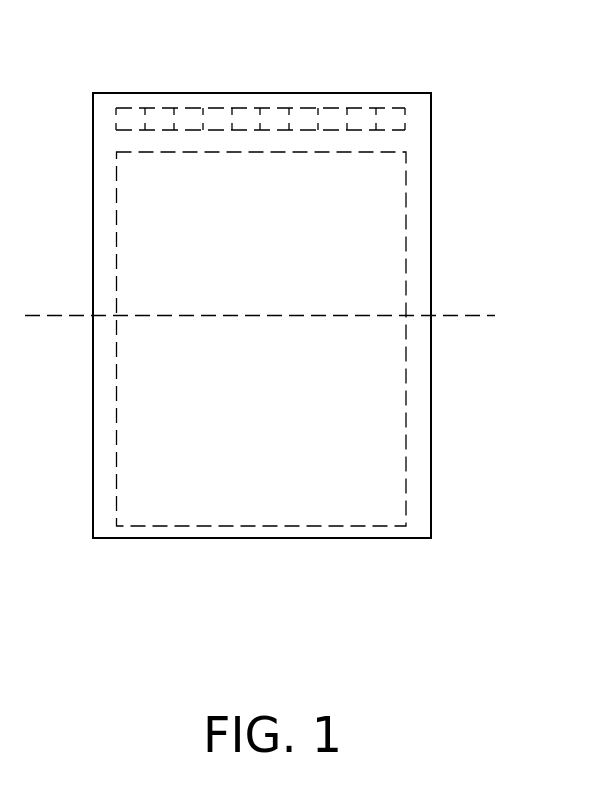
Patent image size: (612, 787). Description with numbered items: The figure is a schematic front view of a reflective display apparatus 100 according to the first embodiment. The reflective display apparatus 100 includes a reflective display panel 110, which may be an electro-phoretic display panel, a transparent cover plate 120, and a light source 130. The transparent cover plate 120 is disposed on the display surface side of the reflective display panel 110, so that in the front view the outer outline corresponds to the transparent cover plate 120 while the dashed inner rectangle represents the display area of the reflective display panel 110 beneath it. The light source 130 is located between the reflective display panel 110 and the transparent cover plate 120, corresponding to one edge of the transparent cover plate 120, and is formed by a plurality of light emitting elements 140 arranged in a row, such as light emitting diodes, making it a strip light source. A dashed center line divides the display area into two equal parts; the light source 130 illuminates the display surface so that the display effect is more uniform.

The reflective display apparatus 100 is at (305, 281).
The reflective display panel 110 is at (400, 278).
The transparent cover plate 120 is at (420, 203).
The light source 130 is at (333, 108).
The light emitting elements 140 is at (245, 77).